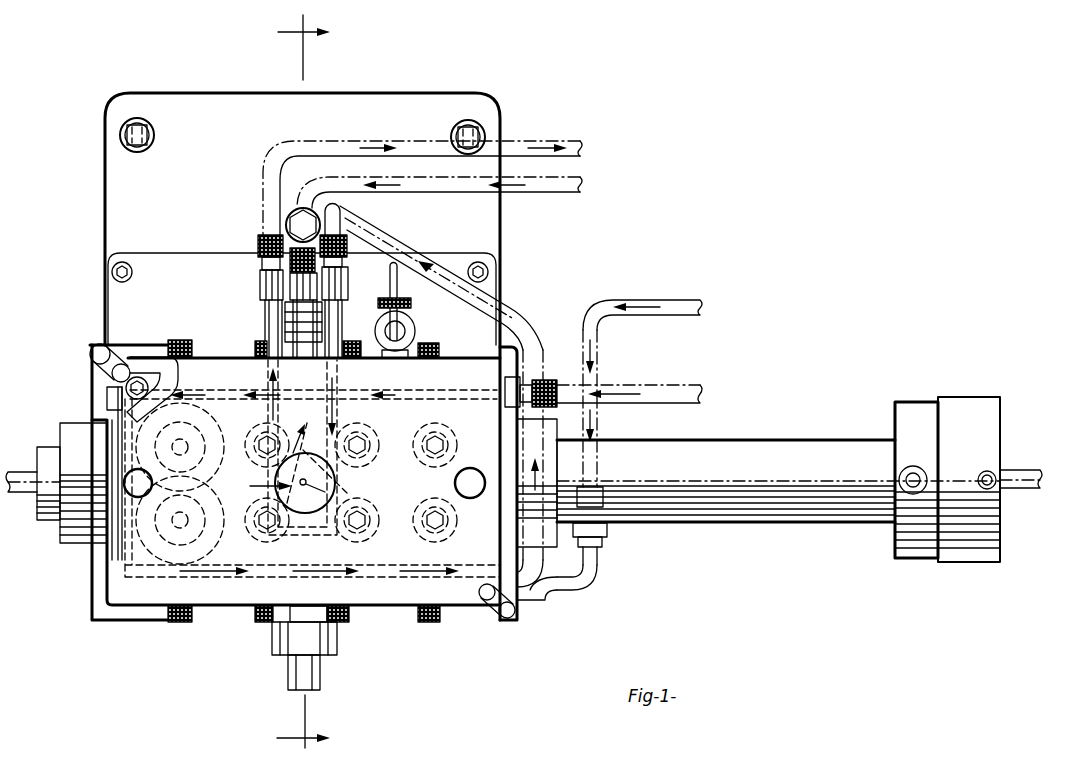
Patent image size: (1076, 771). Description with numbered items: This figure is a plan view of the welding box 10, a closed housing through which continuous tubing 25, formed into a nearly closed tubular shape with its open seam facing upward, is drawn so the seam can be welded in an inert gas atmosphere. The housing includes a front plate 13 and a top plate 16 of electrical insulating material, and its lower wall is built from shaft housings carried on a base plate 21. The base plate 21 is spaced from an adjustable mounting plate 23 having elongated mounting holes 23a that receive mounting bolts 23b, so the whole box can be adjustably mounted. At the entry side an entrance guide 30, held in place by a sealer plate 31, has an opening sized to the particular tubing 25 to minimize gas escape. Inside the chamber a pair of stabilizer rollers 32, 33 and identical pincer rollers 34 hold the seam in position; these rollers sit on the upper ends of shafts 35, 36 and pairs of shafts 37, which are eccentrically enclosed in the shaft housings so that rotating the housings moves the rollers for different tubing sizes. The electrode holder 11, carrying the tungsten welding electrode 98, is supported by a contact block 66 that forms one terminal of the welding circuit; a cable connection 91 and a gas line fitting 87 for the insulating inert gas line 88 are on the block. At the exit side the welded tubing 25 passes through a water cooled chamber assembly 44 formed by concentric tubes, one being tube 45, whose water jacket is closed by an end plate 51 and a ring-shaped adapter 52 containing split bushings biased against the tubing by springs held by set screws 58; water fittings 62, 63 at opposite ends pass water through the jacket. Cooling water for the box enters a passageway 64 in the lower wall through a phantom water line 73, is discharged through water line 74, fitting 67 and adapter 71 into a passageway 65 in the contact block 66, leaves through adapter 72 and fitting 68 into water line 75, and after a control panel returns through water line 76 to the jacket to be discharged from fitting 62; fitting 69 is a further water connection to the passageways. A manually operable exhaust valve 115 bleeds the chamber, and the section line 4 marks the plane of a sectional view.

The section line 4- 4 is at (313, 383).
The welding box 10 is at (229, 672).
The electrode holder 11 is at (259, 484).
The front plate 13 is at (504, 347).
The top plate 16 is at (457, 605).
The base plate 21 is at (126, 296).
The adjustable mounting plate 23 is at (126, 220).
The elongated mounting holes 23a is at (140, 152).
The mounting bolts 23b is at (122, 133).
The continuous tubing 25 is at (22, 494).
The entrance guide 30 is at (32, 445).
The sealer plate 31 is at (72, 443).
The stabilizer roller 32 is at (148, 553).
The stabilizer roller 33 is at (123, 455).
The pincer rollers 34 is at (314, 415).
The shaft 35 is at (188, 524).
The shaft 36 is at (188, 443).
The shafts 37 is at (354, 432).
The water cooled chamber assembly 44 is at (792, 522).
The concentric tube 45 is at (700, 523).
The end plate 51 is at (893, 532).
The adapter 52 is at (972, 525).
The set screws 58 is at (996, 472).
The water fitting 62 is at (900, 478).
The water fitting 63 is at (568, 564).
The water passageway 64 is at (438, 388).
The water passageway 65 is at (353, 477).
The contact block 66 is at (272, 366).
The fitting 67 is at (357, 240).
The fitting 68 is at (260, 243).
The fitting 69 is at (560, 384).
The adapter 71 is at (344, 298).
The adapter 72 is at (262, 338).
The water line 73 is at (658, 386).
The water line 74 is at (518, 322).
The water line 75 is at (526, 141).
The water line 76 is at (613, 298).
The gas line fitting 87 is at (262, 274).
The gas line 88 is at (558, 193).
The cable connection 91 is at (283, 310).
The welding electrode 98 is at (347, 492).
The exhaust valve 115 is at (414, 326).